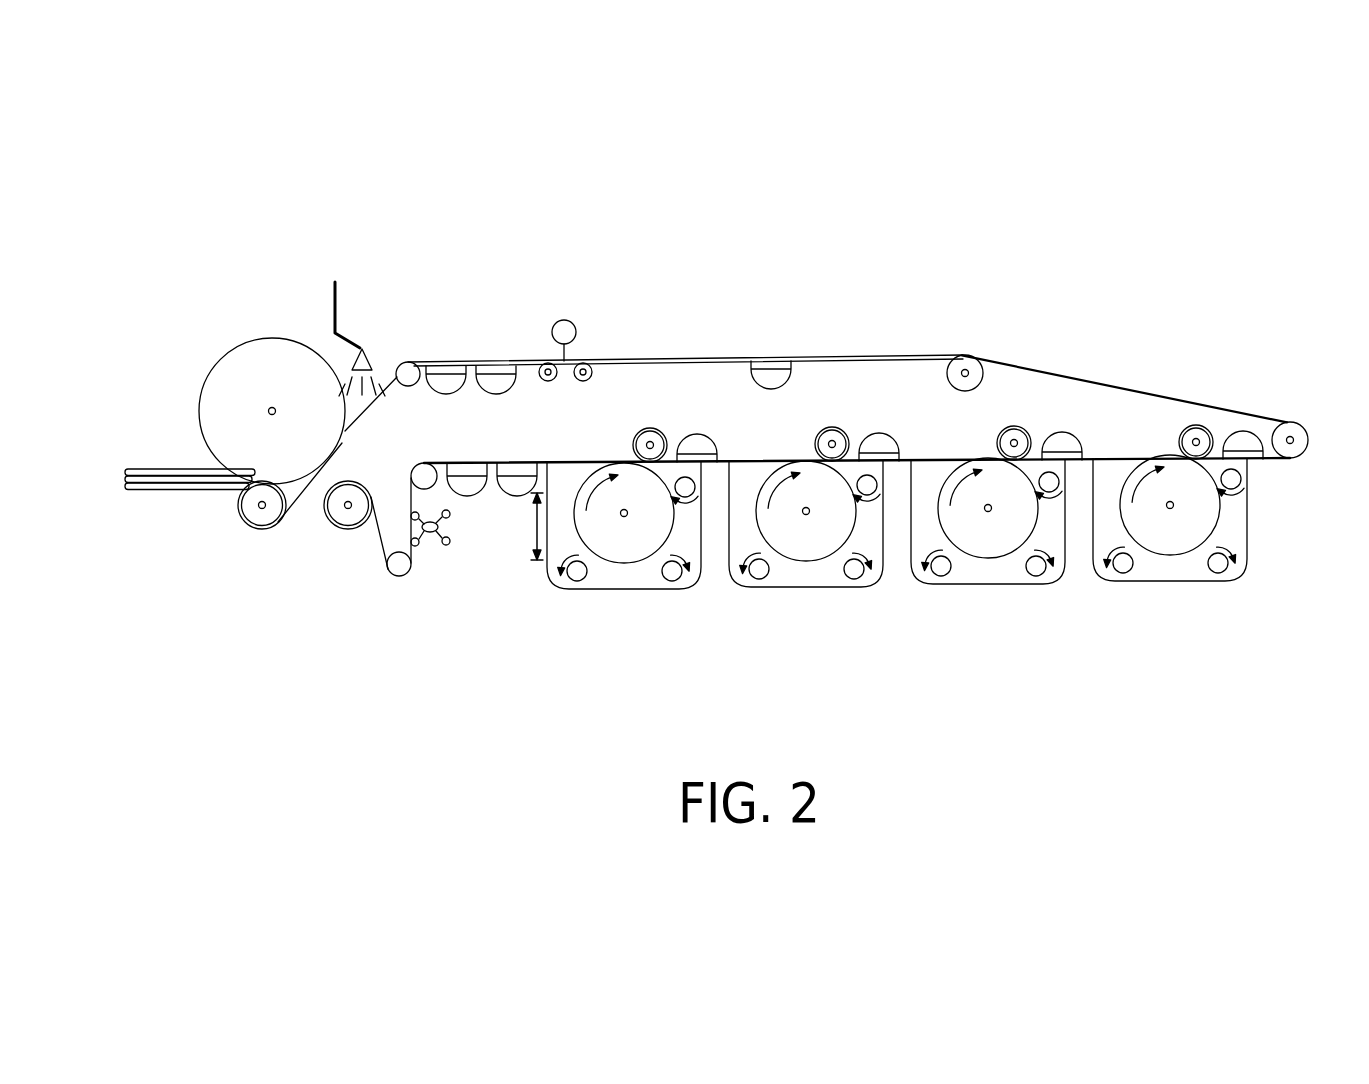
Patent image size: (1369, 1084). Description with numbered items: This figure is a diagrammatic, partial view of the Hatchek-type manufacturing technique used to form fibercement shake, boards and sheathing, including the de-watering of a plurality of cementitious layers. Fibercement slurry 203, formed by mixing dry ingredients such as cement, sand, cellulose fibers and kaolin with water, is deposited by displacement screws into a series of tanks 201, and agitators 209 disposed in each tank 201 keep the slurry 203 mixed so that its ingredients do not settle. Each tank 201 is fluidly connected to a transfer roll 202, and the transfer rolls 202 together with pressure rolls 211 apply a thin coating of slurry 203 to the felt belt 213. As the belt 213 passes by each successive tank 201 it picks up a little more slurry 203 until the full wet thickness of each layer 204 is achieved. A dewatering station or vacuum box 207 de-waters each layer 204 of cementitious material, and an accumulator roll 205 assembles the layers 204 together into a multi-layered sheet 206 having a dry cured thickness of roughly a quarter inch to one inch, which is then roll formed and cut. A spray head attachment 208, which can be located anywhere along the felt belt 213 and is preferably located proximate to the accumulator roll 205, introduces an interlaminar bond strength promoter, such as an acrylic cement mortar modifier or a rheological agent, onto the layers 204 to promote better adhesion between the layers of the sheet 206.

The tank 201 is at (613, 590).
The transfer roll 202 is at (590, 524).
The slurry 203 is at (640, 578).
The layer 204 is at (123, 497).
The accumulator roll 205 is at (233, 348).
The multi-layered sheet 206 is at (137, 467).
The vacuum box 207 is at (520, 484).
The spray head attachment 208 is at (338, 297).
The agitator 209 is at (575, 578).
The pressure roll 211 is at (652, 428).
The felt belt 213 is at (570, 462).